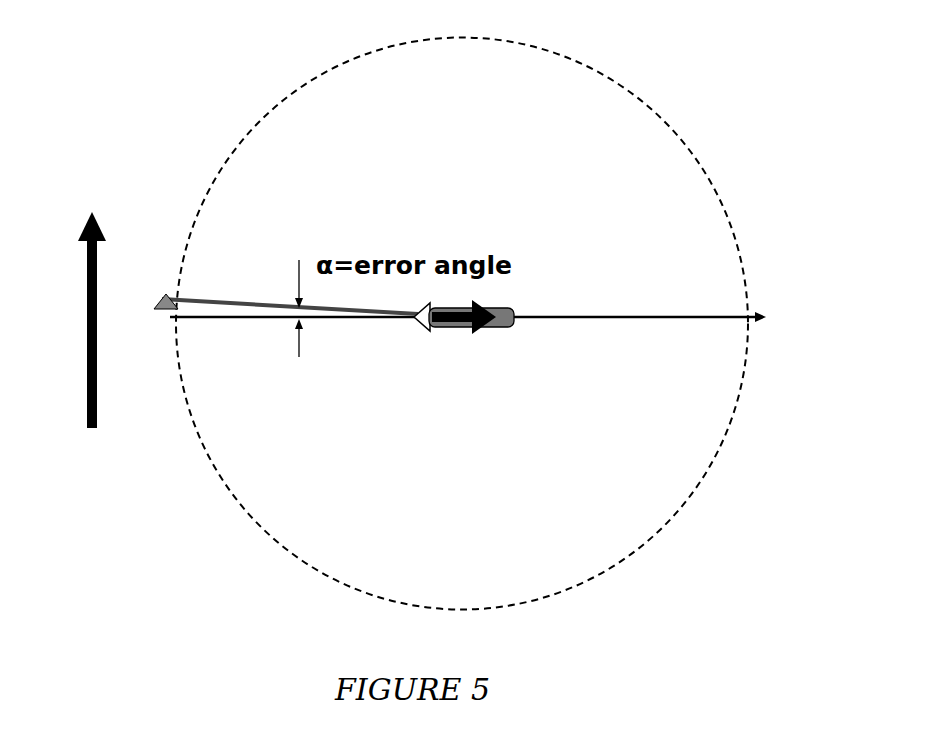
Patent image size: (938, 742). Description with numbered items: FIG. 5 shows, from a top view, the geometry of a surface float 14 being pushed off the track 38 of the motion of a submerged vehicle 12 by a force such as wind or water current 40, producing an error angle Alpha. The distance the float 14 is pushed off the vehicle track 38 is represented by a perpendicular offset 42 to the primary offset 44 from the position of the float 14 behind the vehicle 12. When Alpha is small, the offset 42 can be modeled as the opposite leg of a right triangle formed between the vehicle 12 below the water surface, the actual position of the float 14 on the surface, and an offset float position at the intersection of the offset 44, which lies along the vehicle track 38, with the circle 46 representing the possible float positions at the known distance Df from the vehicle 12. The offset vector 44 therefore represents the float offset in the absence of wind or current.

The vehicle 12 is at (516, 316).
The float 14 is at (168, 297).
The vehicle track 38 is at (721, 316).
The wind or water current 40 is at (86, 393).
The perpendicular offset 42 is at (163, 310).
The primary offset 44 is at (236, 320).
The circle 46 is at (725, 438).